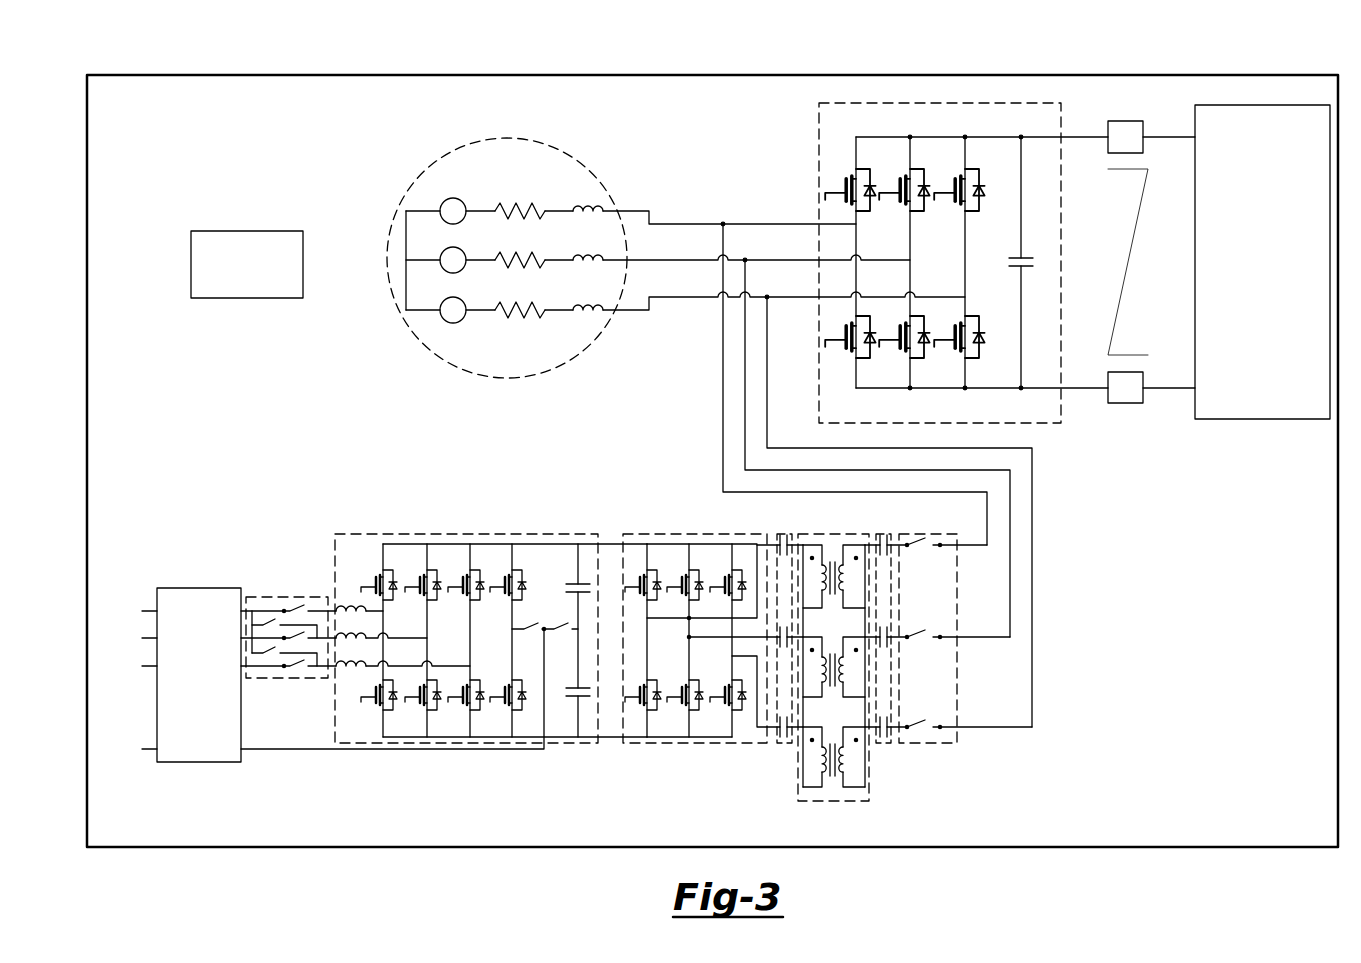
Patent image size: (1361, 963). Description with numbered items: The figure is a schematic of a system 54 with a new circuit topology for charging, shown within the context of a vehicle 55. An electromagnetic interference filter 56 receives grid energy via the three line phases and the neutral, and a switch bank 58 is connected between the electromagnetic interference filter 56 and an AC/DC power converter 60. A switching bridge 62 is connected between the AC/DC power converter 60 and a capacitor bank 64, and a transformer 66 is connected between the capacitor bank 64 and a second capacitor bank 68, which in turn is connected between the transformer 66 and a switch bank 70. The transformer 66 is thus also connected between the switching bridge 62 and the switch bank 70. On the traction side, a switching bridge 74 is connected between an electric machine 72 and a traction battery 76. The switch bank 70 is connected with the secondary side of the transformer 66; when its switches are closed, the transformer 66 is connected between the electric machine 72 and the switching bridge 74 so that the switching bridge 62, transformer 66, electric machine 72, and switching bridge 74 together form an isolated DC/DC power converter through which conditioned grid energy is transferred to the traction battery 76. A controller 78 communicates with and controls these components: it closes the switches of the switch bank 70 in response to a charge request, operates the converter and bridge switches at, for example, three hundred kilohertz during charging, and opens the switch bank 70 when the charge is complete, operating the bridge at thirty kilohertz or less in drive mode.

The system 54 is at (176, 149).
The vehicle 55 is at (727, 74).
The electromagnetic interference filter 56 is at (200, 588).
The switch bank 58 is at (289, 597).
The AC/DC power converter 60 is at (470, 534).
The switching bridge 62 is at (697, 534).
The capacitor bank 64 is at (784, 745).
The transformer 66 is at (832, 802).
The capacitor bank 68 is at (883, 745).
The switch bank 70 is at (925, 745).
The electric machine 72 is at (508, 380).
The switching bridge 74 is at (819, 137).
The traction battery 76 is at (1262, 420).
The controller 78 is at (246, 231).